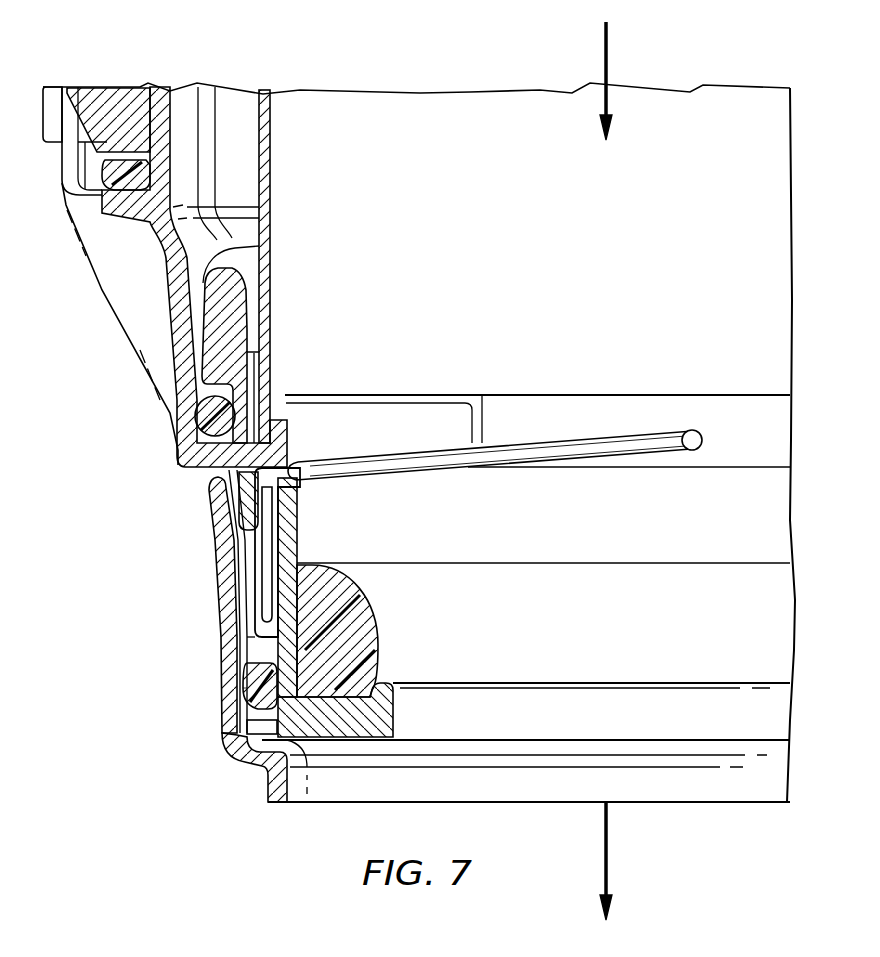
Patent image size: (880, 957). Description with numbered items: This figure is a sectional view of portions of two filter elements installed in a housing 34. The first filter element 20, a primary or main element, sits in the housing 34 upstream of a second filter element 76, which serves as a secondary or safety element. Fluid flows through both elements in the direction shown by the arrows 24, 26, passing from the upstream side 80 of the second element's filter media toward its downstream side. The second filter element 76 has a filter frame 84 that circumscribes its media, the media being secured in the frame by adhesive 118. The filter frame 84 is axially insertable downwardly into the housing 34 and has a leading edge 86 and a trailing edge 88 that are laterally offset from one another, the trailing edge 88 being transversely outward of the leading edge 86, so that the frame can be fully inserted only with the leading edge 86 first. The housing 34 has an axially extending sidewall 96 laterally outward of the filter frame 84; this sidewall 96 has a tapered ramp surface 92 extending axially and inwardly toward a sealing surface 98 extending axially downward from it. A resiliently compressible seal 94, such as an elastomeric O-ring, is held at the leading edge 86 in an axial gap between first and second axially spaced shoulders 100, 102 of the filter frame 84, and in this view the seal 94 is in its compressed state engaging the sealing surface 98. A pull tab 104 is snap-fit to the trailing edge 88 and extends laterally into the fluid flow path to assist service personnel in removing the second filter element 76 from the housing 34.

The filter element 20 is at (272, 234).
The fluid flow arrow 24 is at (609, 62).
The fluid flow arrow 26 is at (609, 842).
The housing 34 is at (178, 470).
The second filter element 76 is at (297, 531).
The upstream side 80 is at (778, 603).
The filter frame 84 is at (280, 590).
The leading edge 86 is at (224, 748).
The trailing edge 88 is at (207, 492).
The tapered ramp surface 92 is at (230, 532).
The seal 94 is at (252, 693).
The sidewall 96 is at (220, 567).
The sealing surface 98 is at (245, 668).
The first shoulder 100 is at (238, 735).
The second shoulder 102 is at (248, 645).
The pull tab 104 is at (586, 437).
The adhesive 118 is at (352, 605).